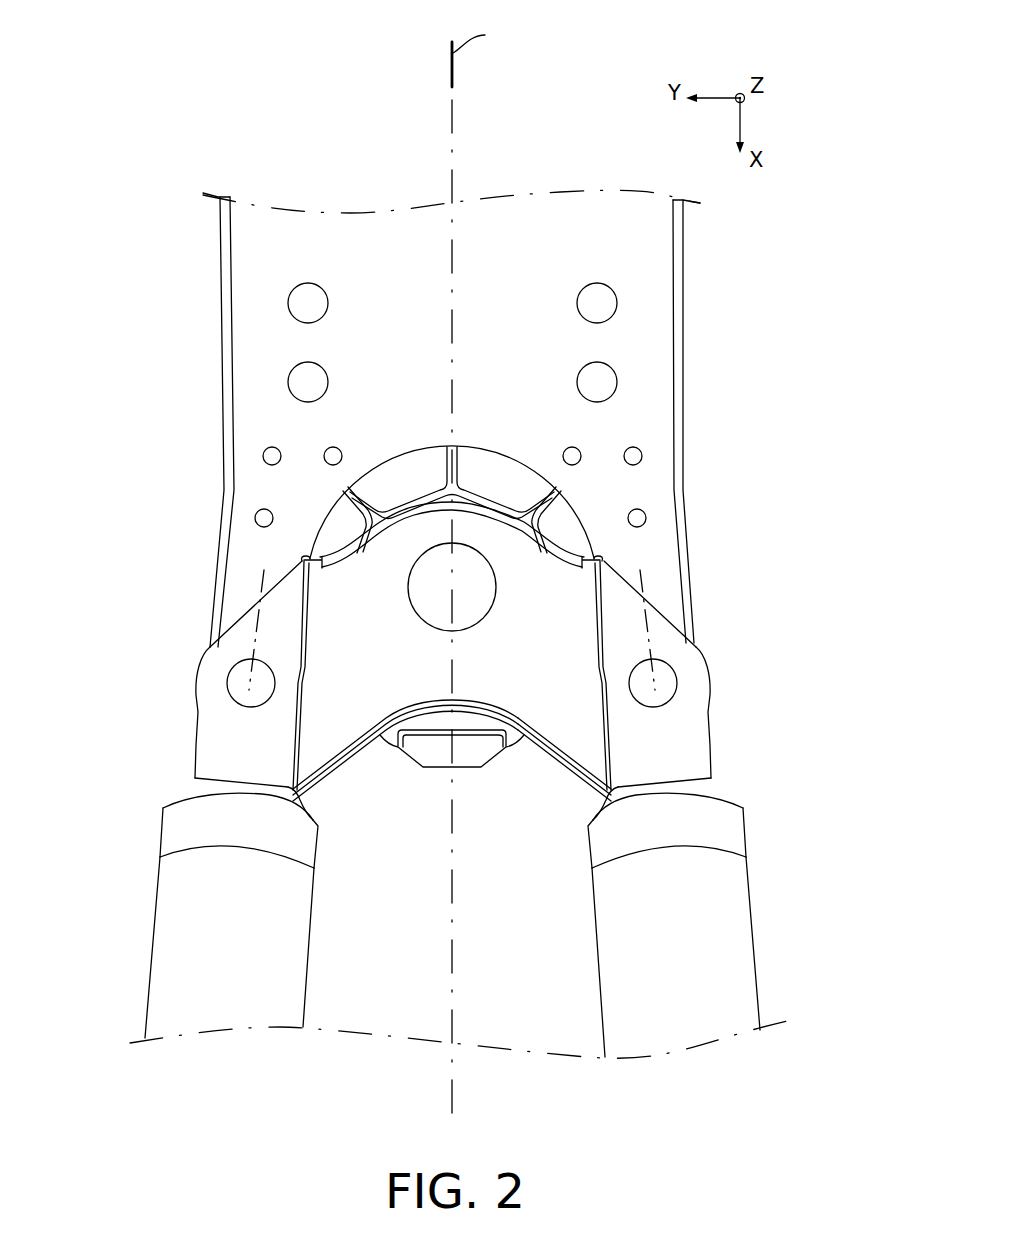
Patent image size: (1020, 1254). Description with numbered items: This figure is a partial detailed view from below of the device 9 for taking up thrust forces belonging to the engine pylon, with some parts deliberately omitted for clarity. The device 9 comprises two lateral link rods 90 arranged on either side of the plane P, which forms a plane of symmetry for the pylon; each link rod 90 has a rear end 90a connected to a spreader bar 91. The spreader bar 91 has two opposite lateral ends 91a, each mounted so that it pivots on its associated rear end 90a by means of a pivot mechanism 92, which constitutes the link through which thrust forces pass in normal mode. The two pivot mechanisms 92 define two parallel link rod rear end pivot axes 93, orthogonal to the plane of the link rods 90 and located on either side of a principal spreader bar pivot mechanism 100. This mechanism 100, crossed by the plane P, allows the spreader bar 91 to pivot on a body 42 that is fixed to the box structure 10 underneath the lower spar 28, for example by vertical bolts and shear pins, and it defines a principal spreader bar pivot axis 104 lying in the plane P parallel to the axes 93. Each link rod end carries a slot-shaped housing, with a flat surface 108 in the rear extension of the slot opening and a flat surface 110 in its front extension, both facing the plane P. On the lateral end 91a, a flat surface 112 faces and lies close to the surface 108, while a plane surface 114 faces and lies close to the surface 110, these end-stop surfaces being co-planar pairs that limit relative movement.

The device for taking up thrust forces 9 is at (186, 609).
The box structure 10 is at (406, 420).
The lower spar 28 is at (260, 233).
The body 42 is at (492, 470).
The lateral link rod 90 is at (146, 934).
The rear end of link rod 90a is at (222, 712).
The spreader bar 91 is at (573, 782).
The lateral end of spreader bar 91a is at (193, 680).
The pivot mechanism 92 is at (268, 676).
The link rod rear end pivot axis 93 is at (261, 585).
The principal spreader bar pivot mechanism 100 is at (421, 600).
The principal spreader bar pivot axis 104 is at (455, 265).
The flat surface 108 is at (318, 571).
The flat surface 110 is at (283, 779).
The flat surface 112 is at (300, 565).
The plane surface 114 is at (610, 763).